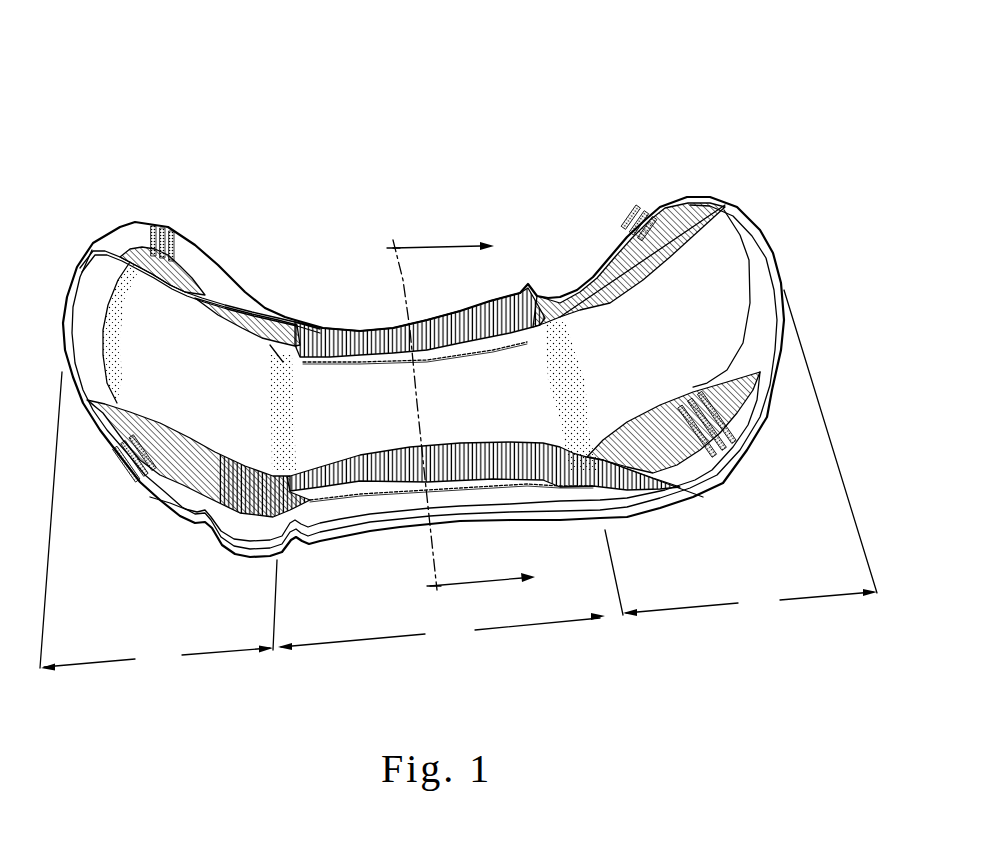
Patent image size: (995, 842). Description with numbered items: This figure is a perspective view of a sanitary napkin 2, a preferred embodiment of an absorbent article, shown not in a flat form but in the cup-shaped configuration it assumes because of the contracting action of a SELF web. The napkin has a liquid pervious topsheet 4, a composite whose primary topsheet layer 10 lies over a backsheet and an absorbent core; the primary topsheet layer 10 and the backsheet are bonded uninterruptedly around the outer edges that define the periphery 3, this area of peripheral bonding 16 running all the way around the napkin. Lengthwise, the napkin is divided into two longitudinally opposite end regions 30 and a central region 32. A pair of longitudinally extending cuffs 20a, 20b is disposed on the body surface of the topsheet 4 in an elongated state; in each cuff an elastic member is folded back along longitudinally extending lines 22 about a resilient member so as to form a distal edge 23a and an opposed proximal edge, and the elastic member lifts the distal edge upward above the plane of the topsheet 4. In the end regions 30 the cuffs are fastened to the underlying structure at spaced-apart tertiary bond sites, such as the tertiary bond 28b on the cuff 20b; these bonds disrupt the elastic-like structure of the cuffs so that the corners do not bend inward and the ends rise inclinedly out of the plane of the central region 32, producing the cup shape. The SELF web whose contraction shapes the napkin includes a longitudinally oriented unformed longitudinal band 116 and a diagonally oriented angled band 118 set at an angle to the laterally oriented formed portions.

The sanitary napkin 2 is at (441, 180).
The topsheet 4 is at (393, 285).
The primary topsheet layer 10 is at (505, 397).
The area of peripheral bonding 16 is at (750, 247).
The cuff 20a is at (372, 318).
The cuff 20b is at (273, 499).
The longitudinally extending lines 22 is at (431, 262).
The distal edge 23a is at (485, 307).
The tertiary bond 28b is at (735, 446).
The longitudinal band 116 is at (533, 478).
The angled band 118 is at (703, 497).
The end regions 30 is at (458, 482).
The central region 32 is at (441, 633).
The periphery 3 is at (461, 395).